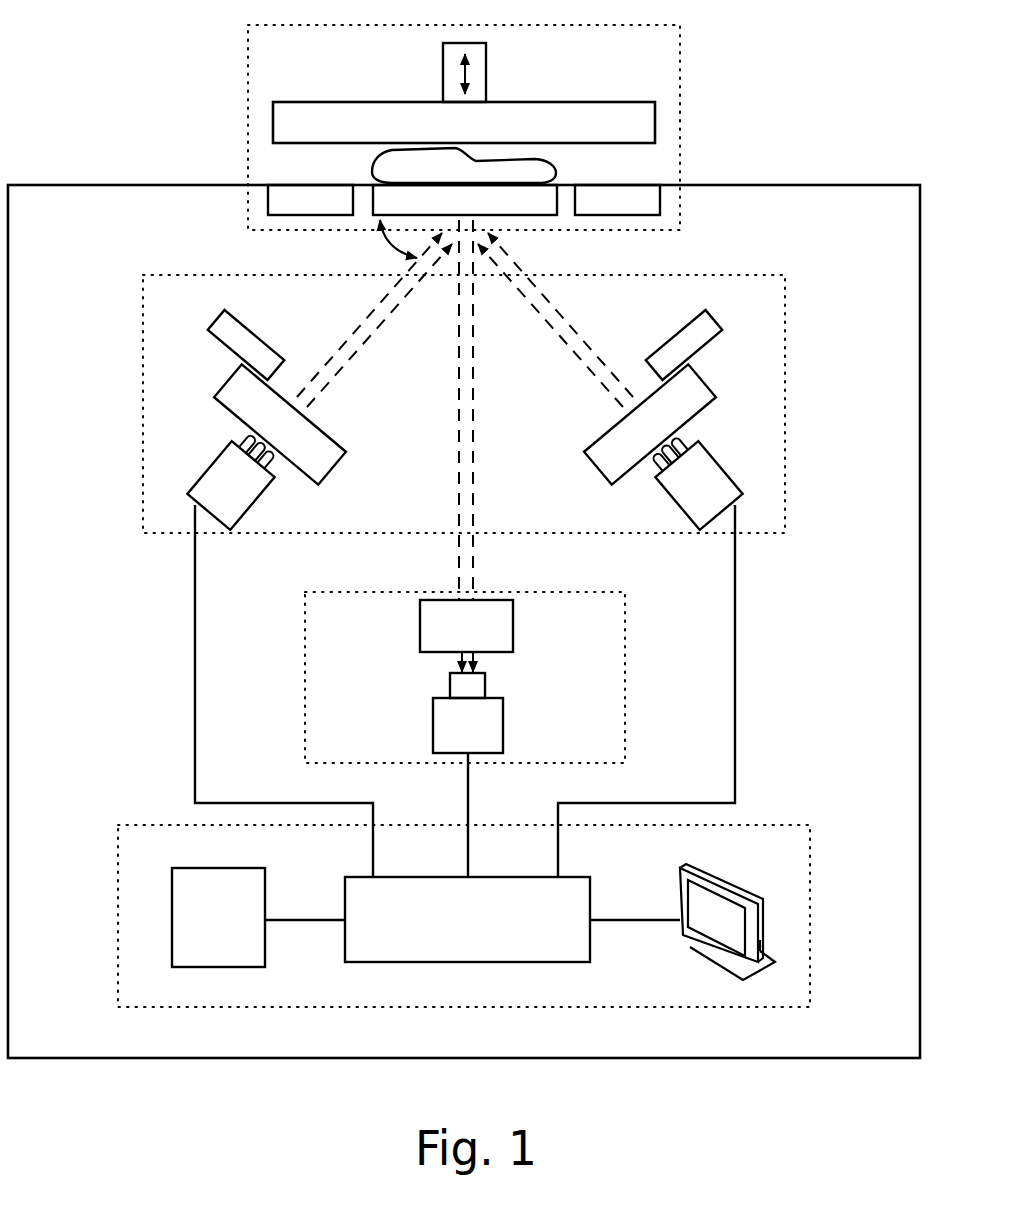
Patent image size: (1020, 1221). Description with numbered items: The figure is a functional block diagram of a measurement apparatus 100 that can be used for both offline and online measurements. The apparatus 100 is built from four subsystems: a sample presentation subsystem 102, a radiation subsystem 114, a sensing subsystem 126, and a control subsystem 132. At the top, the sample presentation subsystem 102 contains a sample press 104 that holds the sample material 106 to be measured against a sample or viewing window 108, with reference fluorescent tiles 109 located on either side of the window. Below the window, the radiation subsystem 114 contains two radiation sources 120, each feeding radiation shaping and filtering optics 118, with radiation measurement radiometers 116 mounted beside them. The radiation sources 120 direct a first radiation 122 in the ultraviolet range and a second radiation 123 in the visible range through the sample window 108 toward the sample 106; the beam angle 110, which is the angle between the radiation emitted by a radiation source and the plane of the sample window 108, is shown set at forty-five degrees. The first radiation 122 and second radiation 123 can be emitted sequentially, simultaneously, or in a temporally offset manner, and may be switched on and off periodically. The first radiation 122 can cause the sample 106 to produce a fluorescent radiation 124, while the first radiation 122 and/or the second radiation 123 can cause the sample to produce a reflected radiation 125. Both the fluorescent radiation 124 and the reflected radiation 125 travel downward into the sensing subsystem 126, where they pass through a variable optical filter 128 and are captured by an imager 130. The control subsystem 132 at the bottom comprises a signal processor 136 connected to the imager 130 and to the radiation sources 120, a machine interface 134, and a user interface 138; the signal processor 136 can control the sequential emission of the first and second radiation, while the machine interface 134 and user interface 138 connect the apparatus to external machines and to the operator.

The apparatus 100 is at (27, 58).
The sample presentation subsystem 102 is at (464, 127).
The sample press 104 is at (464, 93).
The sample material 106 is at (464, 165).
The sample window 108 is at (465, 200).
The reference fluorescent tiles 109 is at (464, 200).
The beam angle 110 is at (378, 246).
The radiation subsystem 114 is at (464, 404).
The radiation measurement radiometers 116 is at (465, 345).
The radiation shaping and filtering optics 118 is at (465, 424).
The radiation sources 120 is at (464, 478).
The first radiation 122 is at (465, 315).
The second radiation 123 is at (465, 325).
The fluorescent radiation 124 is at (431, 410).
The reflected radiation 125 is at (499, 410).
The sensing subsystem 126 is at (465, 677).
The variable optical filter 128 is at (466, 636).
The imager 130 is at (468, 713).
The control subsystem 132 is at (464, 916).
The machine interface 134 is at (218, 917).
The signal processor 136 is at (467, 919).
The user interface 138 is at (727, 922).